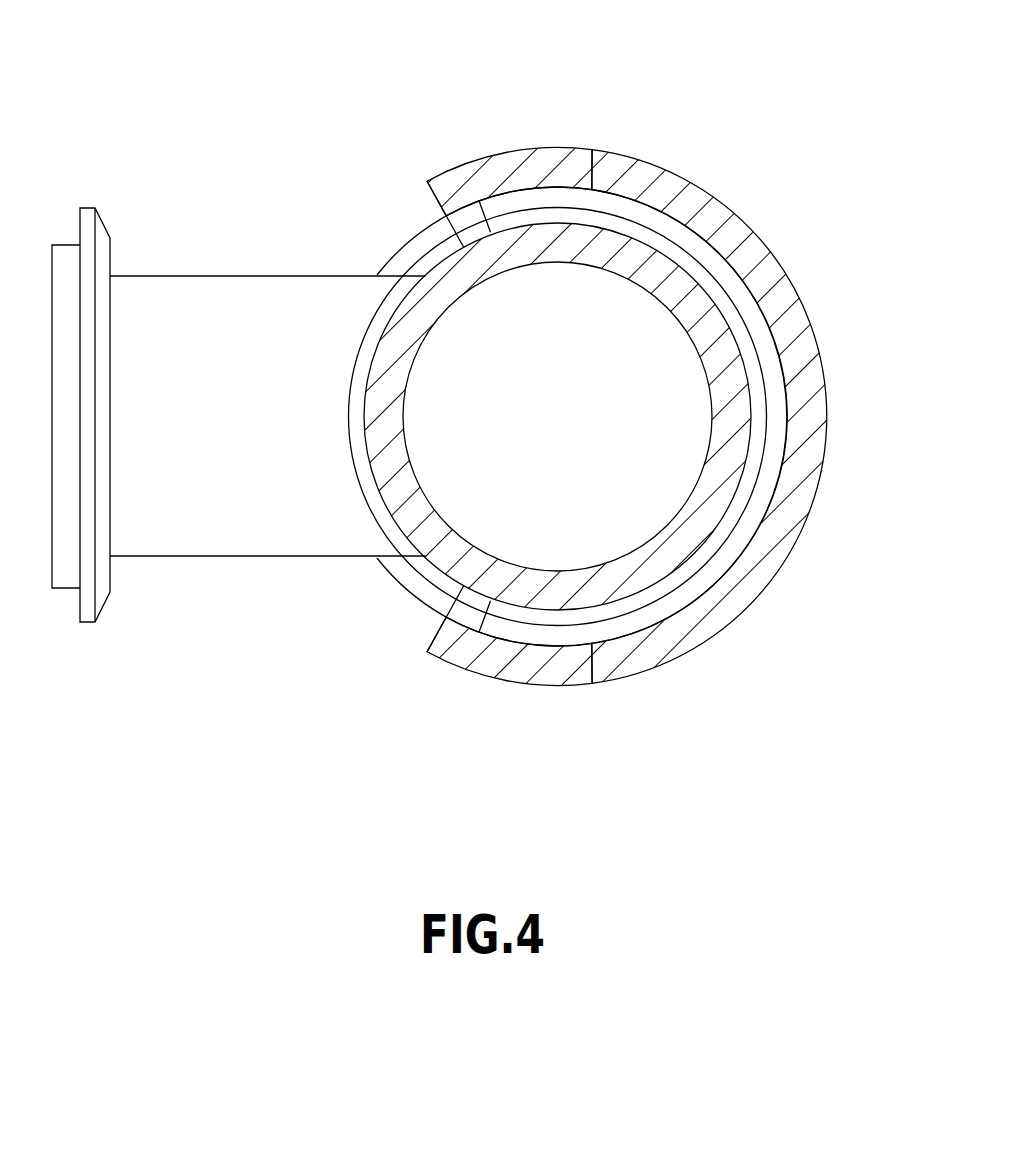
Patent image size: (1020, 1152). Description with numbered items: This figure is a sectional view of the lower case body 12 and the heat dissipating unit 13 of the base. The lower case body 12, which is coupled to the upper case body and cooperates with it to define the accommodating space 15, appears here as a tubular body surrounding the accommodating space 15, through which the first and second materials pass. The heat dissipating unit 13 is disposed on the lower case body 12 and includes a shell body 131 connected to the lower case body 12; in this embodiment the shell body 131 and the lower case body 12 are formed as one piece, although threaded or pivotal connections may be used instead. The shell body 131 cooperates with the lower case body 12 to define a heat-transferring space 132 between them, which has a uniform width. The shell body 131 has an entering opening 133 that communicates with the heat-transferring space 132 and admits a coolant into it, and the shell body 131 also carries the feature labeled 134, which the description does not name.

The lower case body 12 is at (437, 263).
The heat dissipating unit 13 is at (663, 410).
The accommodating space 15 is at (613, 318).
The shell body 131 is at (802, 345).
The heat-transferring space 132 is at (692, 595).
The entering opening 133 is at (560, 670).
The upper tab 134 is at (584, 160).